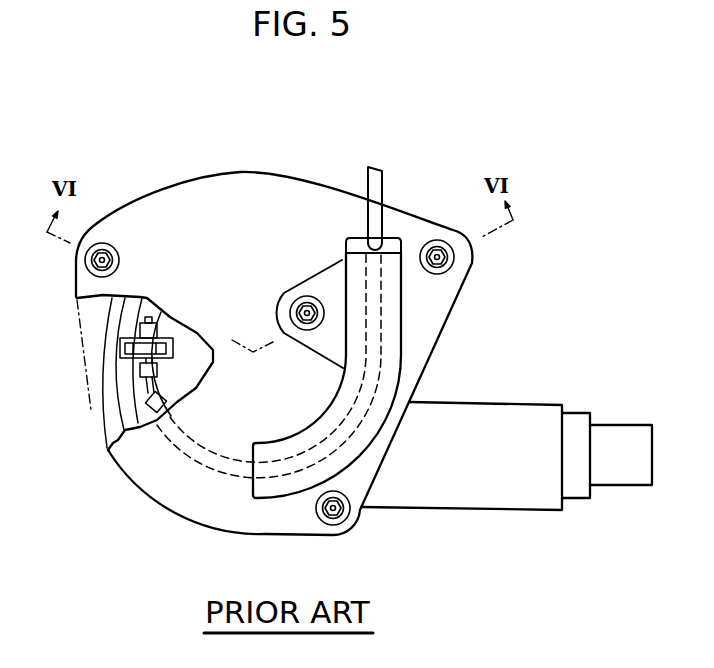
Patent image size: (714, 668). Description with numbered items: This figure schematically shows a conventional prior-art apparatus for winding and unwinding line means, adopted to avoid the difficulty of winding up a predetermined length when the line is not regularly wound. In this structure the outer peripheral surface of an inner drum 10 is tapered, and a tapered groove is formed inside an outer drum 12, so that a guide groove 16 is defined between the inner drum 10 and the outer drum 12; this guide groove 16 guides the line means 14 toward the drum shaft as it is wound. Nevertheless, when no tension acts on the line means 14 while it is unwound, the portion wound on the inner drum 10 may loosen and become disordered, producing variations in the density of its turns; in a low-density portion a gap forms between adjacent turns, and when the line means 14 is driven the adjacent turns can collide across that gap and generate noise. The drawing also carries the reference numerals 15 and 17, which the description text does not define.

The inner drum 10 is at (137, 312).
The outer drum 12 is at (124, 368).
The line means 14 is at (370, 178).
The pressing head housing 15 is at (437, 307).
The guide groove 16 is at (142, 395).
The cable guide channel 17 is at (392, 240).